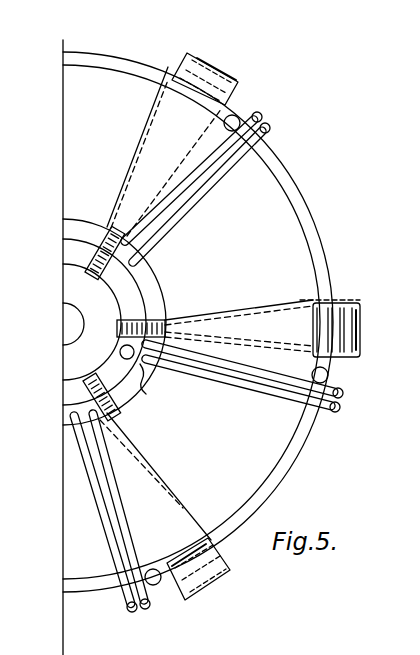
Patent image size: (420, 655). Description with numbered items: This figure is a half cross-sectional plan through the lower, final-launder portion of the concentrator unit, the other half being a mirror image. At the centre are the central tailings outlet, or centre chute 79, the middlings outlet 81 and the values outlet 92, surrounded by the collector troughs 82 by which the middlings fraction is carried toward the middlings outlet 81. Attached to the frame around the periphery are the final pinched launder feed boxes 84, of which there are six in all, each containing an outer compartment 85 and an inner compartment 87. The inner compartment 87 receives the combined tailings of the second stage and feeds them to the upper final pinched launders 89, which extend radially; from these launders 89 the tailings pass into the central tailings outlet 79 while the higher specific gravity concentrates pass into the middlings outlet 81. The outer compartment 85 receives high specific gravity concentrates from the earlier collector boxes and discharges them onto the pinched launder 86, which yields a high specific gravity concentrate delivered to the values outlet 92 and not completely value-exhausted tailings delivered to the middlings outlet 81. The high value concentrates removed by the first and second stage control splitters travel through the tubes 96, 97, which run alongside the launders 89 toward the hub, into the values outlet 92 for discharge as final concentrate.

The centre chute 79 is at (72, 332).
The middlings outlet 81 is at (120, 351).
The collector troughs 82 is at (64, 394).
The final pinched launder feed boxes 84 is at (240, 100).
The outer compartment 85 is at (210, 70).
The pinched launder 86 is at (183, 57).
The inner compartment 87 is at (200, 108).
The upper final pinched launders 89 is at (150, 119).
The values outlet 92 is at (148, 376).
The tube 96 is at (195, 208).
The tube 97 is at (212, 165).